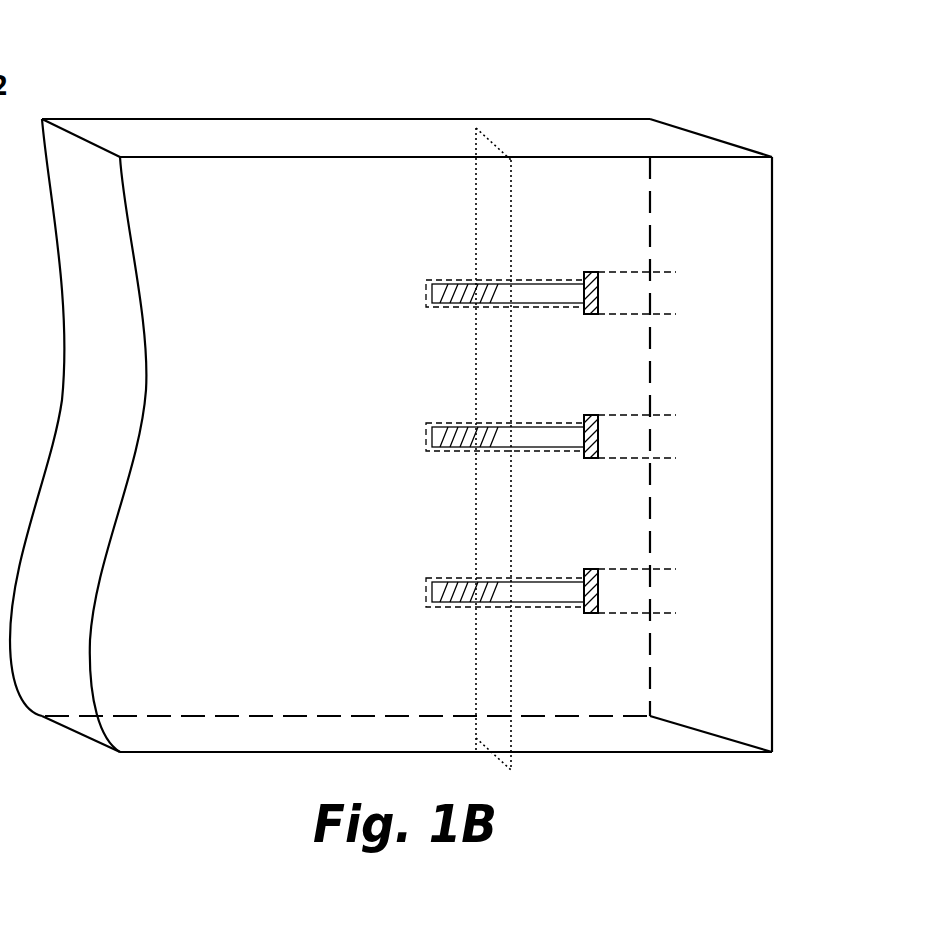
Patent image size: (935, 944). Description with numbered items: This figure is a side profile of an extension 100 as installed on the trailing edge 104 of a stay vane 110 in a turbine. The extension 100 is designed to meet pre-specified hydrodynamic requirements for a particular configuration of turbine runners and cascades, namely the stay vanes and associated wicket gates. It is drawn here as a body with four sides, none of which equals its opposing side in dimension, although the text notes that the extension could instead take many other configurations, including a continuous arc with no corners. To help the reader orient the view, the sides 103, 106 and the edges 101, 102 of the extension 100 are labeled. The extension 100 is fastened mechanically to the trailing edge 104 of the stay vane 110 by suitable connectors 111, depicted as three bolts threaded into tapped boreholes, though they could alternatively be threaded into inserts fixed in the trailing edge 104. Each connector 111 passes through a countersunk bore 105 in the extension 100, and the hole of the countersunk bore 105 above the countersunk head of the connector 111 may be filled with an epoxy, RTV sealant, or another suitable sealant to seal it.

The extension 100 is at (583, 78).
The edge 101 is at (655, 143).
The edge 102 is at (777, 212).
The side 103 is at (708, 702).
The trailing edge 104 is at (492, 528).
The countersunk bore 105 is at (677, 292).
The side 106 is at (728, 532).
The stay vane 110 is at (193, 98).
The connector 111 is at (447, 290).